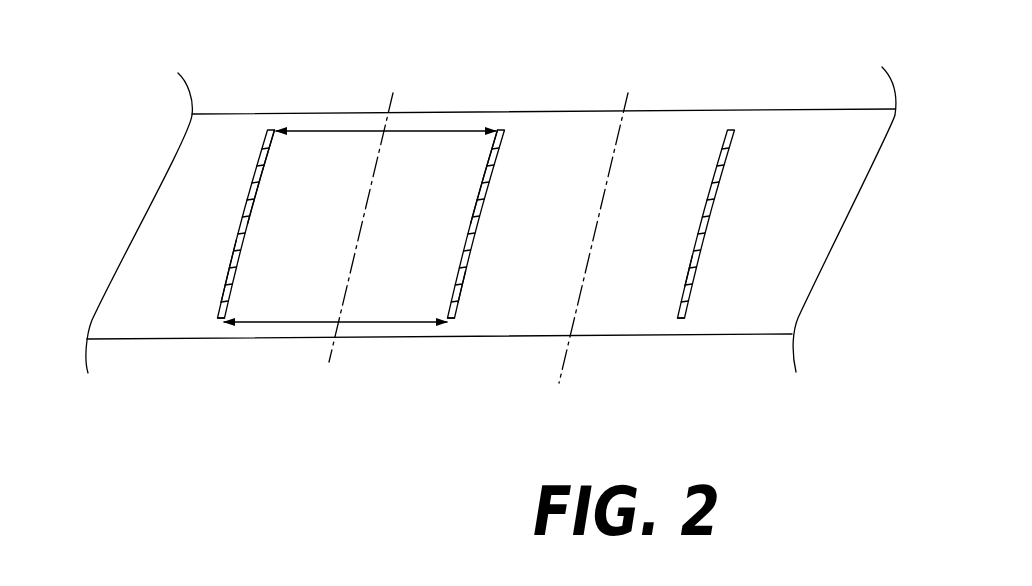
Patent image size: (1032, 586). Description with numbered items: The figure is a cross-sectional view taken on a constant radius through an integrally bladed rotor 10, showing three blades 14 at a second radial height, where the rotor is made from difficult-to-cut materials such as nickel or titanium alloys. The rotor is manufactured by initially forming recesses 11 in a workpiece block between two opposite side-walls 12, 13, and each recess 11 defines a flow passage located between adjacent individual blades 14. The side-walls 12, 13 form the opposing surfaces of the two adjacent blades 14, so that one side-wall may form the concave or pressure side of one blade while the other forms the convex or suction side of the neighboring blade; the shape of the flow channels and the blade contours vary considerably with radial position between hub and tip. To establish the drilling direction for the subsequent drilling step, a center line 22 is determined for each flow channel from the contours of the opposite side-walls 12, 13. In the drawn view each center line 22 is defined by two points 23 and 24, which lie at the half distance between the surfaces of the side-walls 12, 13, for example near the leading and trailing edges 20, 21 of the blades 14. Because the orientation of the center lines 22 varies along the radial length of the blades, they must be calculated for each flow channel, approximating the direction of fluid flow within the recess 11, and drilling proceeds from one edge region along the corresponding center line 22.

The integrally bladed rotor 10 is at (491, 252).
The recess 11 is at (326, 176).
The side-wall 12 is at (271, 195).
The side-wall 13 is at (480, 166).
The blade 14 is at (217, 305).
The leading edge 20 is at (222, 323).
The trailing edge 21 is at (273, 130).
The center line 22 is at (380, 153).
The point 23 is at (342, 322).
The point 24 is at (380, 132).